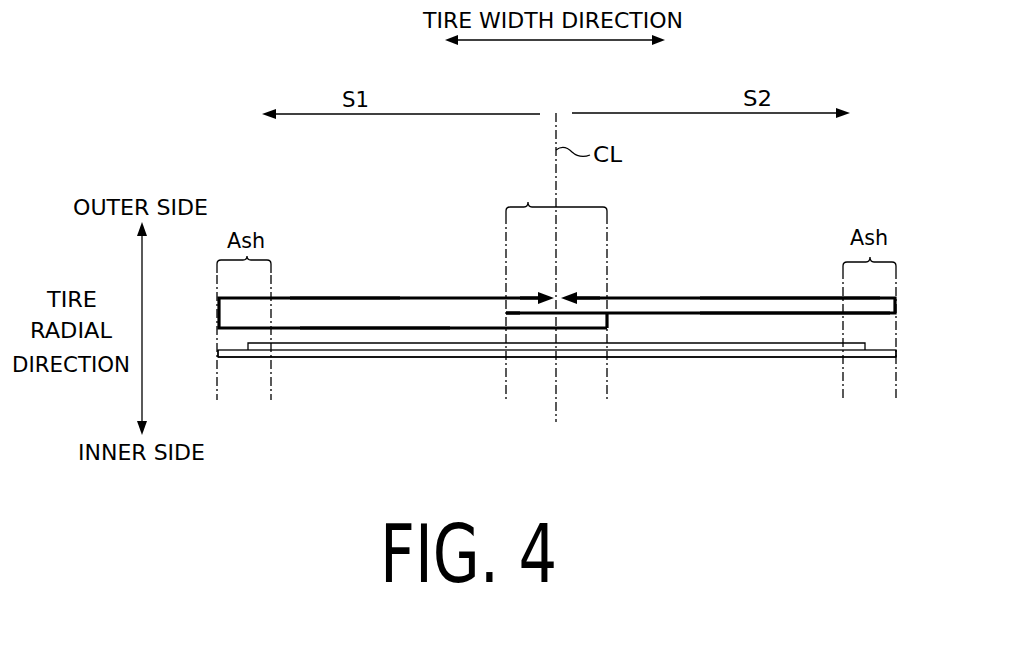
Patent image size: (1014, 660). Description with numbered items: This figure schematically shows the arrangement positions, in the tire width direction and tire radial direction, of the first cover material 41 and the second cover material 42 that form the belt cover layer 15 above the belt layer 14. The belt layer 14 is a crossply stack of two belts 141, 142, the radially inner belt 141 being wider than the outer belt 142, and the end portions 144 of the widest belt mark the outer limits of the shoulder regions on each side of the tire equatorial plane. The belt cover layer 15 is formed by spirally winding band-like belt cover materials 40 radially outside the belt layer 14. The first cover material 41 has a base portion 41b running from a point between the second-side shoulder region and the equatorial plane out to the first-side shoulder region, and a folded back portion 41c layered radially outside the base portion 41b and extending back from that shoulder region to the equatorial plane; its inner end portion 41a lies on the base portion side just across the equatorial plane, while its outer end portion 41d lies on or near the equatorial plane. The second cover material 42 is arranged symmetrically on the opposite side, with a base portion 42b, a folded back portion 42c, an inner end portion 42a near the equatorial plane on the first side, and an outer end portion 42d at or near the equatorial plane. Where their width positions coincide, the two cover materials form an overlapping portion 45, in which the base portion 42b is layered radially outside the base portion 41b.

The belt layer 14 is at (802, 412).
The belt cover layer 15 is at (358, 221).
The belt cover material 40 is at (557, 328).
The first cover material 41 is at (417, 297).
The inner end portion 41a is at (607, 328).
The base portion 41b is at (376, 328).
The folded back portion 41c is at (342, 297).
The outer end portion 41d is at (547, 292).
The second cover material 42 is at (684, 297).
The inner end portion 42a is at (505, 313).
The base portion 42b is at (823, 313).
The folded back portion 42c is at (780, 297).
The outer end portion 42d is at (566, 294).
The overlapping portion 45 is at (556, 193).
The belt 141 is at (748, 357).
The belt 142 is at (668, 347).
The end portion 144 is at (218, 353).